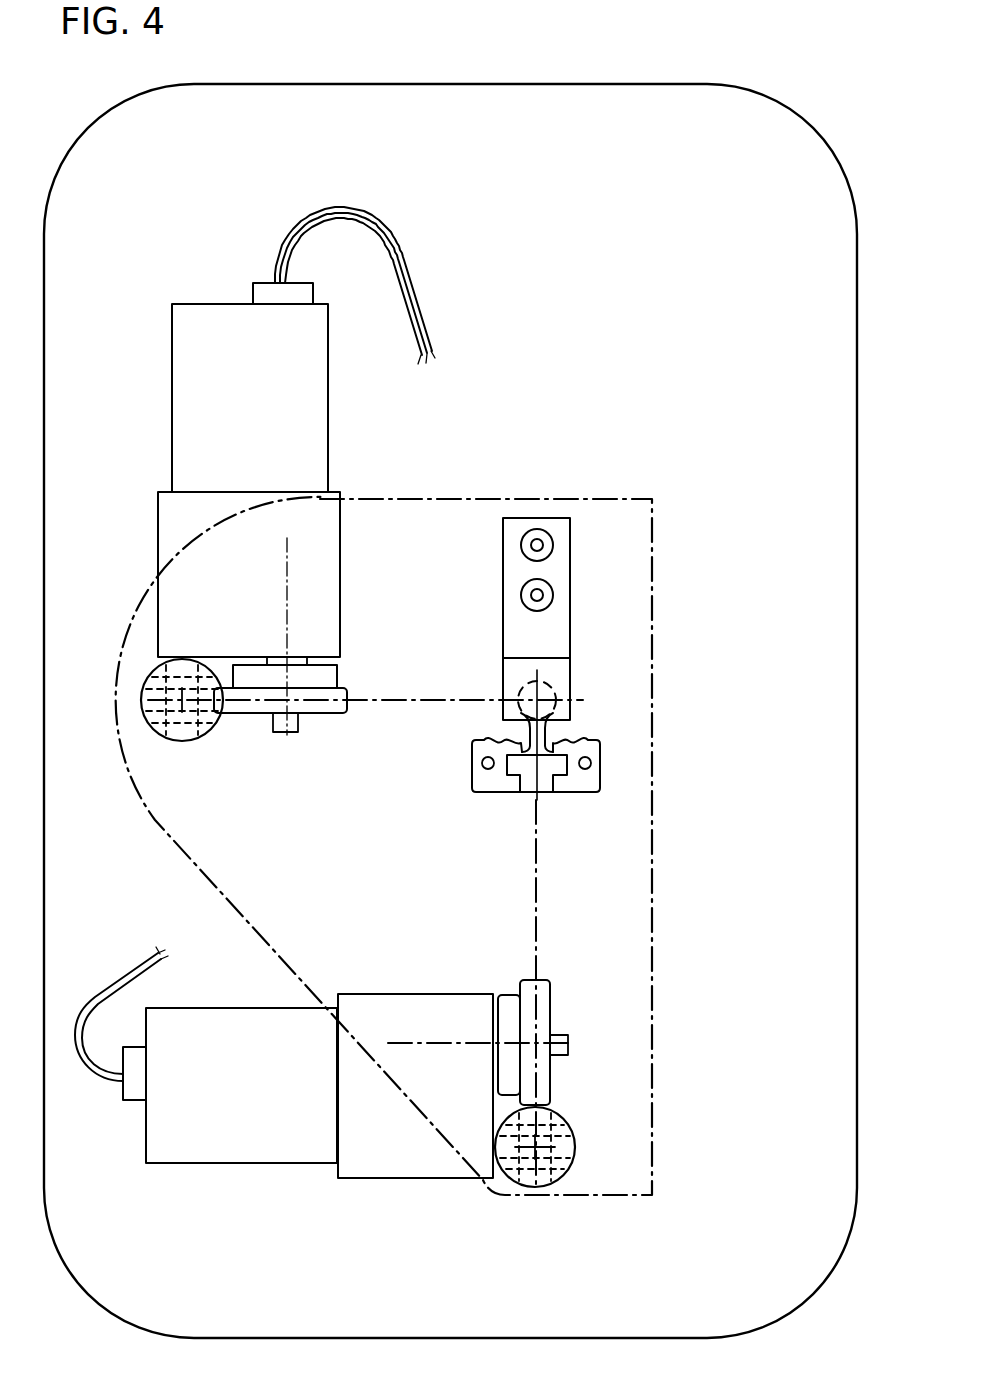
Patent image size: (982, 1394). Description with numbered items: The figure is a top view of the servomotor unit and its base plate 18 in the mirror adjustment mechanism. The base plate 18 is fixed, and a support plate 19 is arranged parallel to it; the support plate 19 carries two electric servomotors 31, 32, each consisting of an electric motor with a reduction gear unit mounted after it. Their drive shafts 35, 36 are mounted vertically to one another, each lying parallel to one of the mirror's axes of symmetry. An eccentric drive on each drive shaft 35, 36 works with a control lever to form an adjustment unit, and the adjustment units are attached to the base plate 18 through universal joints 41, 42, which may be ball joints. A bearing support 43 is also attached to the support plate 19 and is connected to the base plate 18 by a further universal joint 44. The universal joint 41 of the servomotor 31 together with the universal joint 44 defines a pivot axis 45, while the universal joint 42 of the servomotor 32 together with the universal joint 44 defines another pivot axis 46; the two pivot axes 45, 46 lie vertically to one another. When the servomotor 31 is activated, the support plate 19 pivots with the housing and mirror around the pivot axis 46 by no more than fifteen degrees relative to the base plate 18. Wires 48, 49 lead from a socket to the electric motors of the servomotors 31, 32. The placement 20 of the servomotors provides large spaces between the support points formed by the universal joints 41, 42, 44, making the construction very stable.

The base plate 18 is at (652, 838).
The support plate 19 is at (773, 1247).
The placement of the servomotors 20 is at (416, 730).
The electric servomotor 31 is at (205, 470).
The electric servomotor 32 is at (308, 1124).
The drive shaft 35 is at (293, 733).
The drive shaft 36 is at (565, 1040).
The universal joint 41 is at (191, 712).
The universal joint 42 is at (548, 1140).
The bearing support 43 is at (490, 779).
The universal joint 44 is at (550, 693).
The pivot axis 45 is at (422, 700).
The pivot axis 46 is at (538, 900).
The wire 48 is at (403, 263).
The wire 49 is at (118, 975).